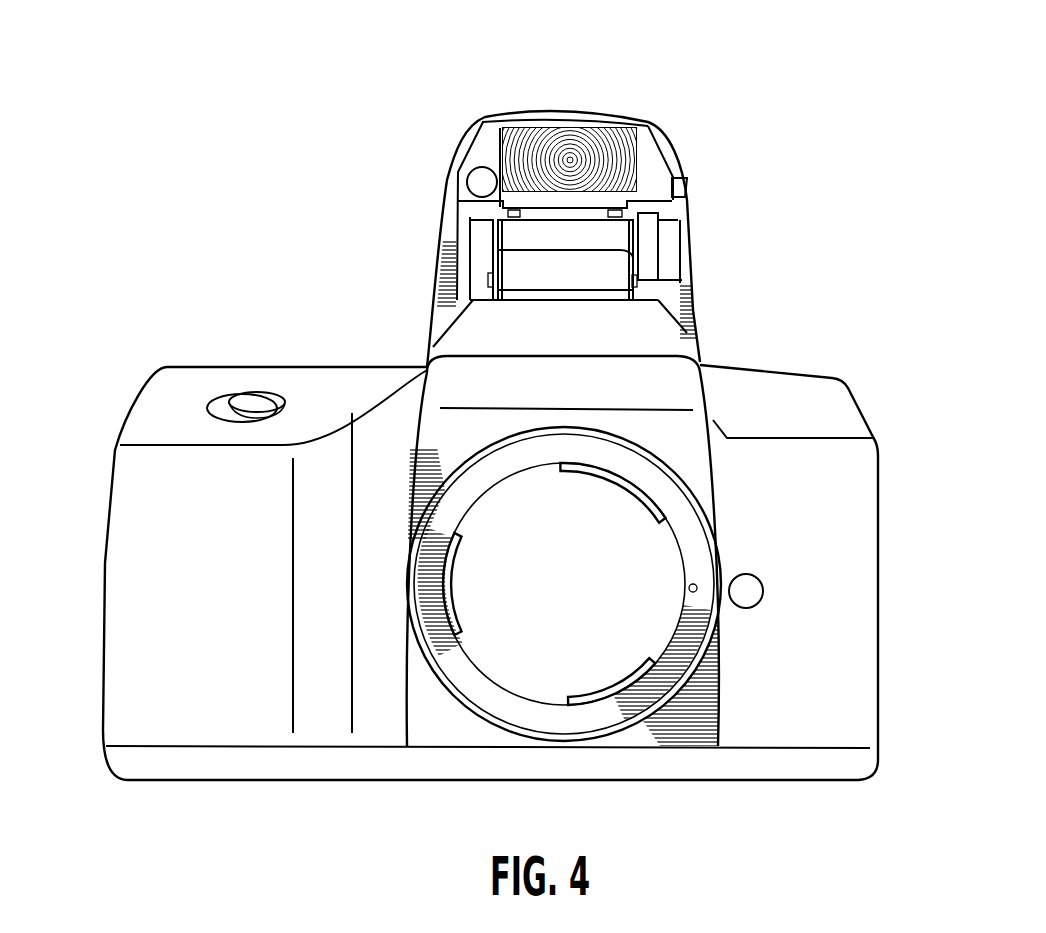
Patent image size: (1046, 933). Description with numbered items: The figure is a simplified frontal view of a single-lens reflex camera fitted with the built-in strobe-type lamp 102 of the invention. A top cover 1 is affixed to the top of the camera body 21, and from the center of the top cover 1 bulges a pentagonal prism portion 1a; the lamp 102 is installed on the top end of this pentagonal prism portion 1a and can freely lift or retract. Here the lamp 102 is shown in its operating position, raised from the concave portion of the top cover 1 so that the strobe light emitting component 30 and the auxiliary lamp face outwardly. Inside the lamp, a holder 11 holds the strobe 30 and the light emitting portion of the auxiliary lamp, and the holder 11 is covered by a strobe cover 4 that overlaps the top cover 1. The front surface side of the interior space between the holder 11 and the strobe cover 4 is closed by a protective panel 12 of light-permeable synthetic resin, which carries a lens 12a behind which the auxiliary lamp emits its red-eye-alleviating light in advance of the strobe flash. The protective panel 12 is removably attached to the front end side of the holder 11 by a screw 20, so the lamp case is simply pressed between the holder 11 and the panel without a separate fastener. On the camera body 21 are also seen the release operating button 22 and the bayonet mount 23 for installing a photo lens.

The top cover 1 is at (330, 373).
The pentagonal prism portion 1a is at (640, 338).
The strobe cover 4 is at (682, 242).
The holder 11 is at (467, 267).
The protective panel 12 is at (653, 163).
The lens 12a is at (480, 172).
The screw 20 is at (463, 208).
The camera body 21 is at (118, 578).
The release operating button 22 is at (257, 402).
The bayonet mount 23 is at (607, 717).
The strobe light emitting component 30 is at (613, 108).
The lamp 102 is at (672, 98).